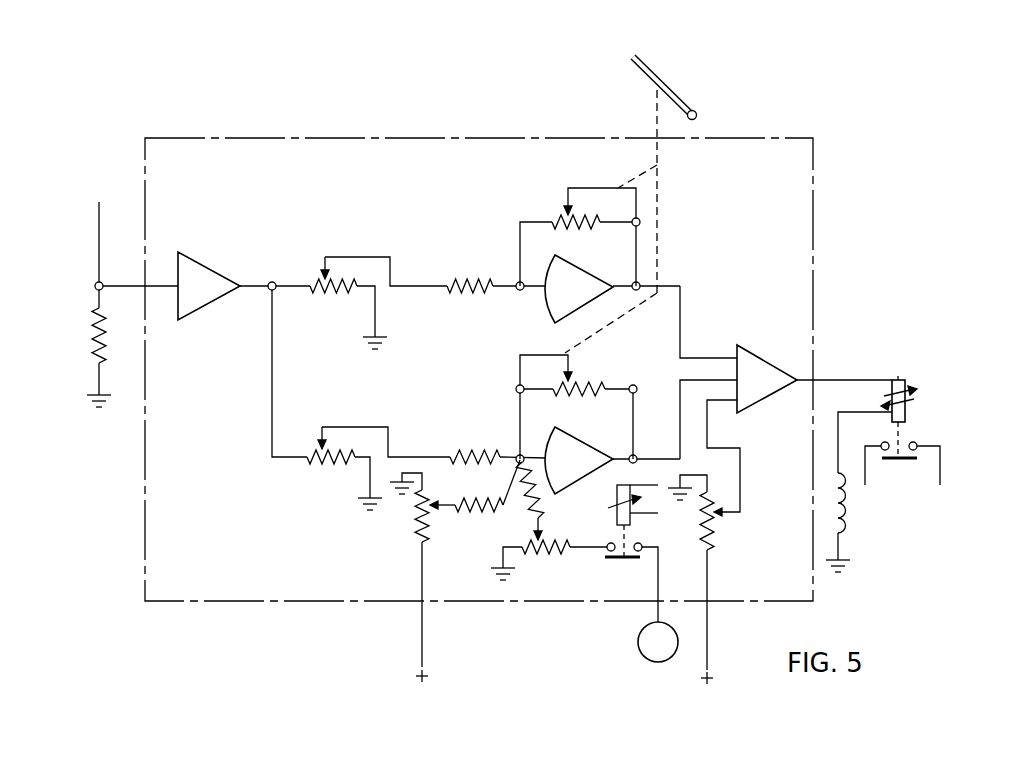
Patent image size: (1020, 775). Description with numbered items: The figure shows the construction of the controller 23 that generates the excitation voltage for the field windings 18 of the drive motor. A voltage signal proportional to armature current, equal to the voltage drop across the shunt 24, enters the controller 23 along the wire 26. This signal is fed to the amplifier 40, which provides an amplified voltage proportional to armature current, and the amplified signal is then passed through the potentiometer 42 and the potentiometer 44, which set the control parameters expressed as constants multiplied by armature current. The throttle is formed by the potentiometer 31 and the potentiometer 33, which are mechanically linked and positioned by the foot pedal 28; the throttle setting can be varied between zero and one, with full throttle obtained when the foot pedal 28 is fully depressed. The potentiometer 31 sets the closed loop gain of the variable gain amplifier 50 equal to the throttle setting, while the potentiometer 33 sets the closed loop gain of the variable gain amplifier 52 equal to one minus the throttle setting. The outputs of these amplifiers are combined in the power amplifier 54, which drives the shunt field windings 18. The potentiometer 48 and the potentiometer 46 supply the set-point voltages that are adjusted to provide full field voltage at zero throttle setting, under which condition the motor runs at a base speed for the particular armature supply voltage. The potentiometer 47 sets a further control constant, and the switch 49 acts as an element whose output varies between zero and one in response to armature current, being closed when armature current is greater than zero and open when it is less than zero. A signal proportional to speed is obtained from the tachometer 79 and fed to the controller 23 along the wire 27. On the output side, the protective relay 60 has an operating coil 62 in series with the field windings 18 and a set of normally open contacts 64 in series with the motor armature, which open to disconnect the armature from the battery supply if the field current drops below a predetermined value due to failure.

The field windings 18 is at (845, 531).
The controller 23 is at (393, 138).
The shunt 24 is at (108, 337).
The wire 26 is at (122, 285).
The wire 27 is at (658, 592).
The foot pedal 28 is at (673, 97).
The potentiometer 31 is at (566, 206).
The potentiometer 33 is at (584, 397).
The amplifier 40 is at (204, 295).
The potentiometer 42 is at (352, 298).
The potentiometer 44 is at (340, 472).
The potentiometer 46 is at (718, 546).
The potentiometer 47 is at (556, 537).
The potentiometer 48 is at (418, 526).
The switch 49 is at (637, 583).
The variable gain amplifier 50 is at (580, 295).
The variable gain amplifier 52 is at (578, 468).
The power amplifier 54 is at (764, 389).
The protective relay 60 is at (947, 399).
The operating coil 62 is at (903, 380).
The normally open contacts 64 is at (907, 446).
The tachometer 79 is at (639, 648).